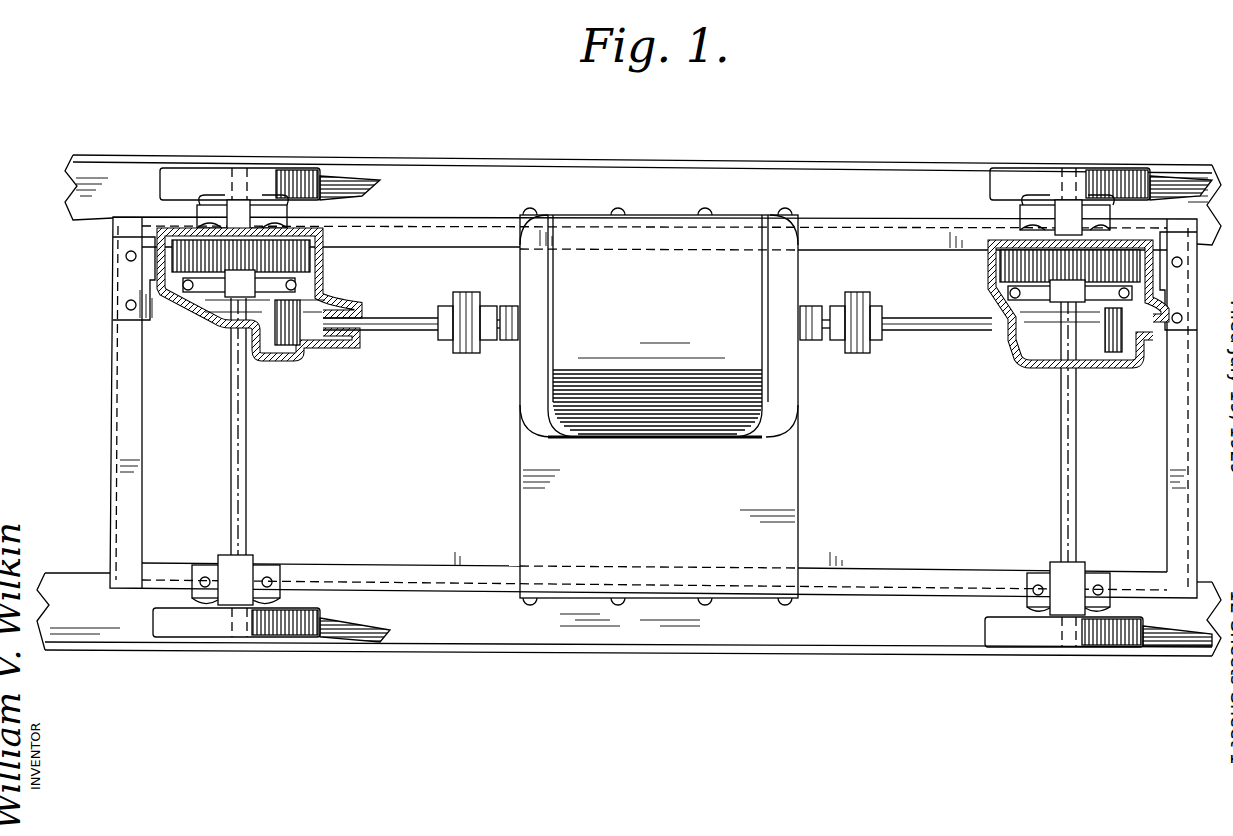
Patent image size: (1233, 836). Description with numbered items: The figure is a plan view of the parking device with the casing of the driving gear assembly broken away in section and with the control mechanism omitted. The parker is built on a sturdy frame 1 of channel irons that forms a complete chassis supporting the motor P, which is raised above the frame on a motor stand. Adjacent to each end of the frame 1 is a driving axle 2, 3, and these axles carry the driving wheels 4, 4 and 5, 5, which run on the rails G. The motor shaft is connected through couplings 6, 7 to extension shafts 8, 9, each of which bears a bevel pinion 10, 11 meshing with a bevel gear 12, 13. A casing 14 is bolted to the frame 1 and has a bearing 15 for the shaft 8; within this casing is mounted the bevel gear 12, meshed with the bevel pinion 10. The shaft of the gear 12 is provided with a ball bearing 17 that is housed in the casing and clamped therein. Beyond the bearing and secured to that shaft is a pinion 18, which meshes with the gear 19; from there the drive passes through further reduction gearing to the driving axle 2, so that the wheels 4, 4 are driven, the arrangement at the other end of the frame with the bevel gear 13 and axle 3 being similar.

The frame 1 is at (478, 236).
The driving axle 2 is at (242, 452).
The driving axle 3 is at (1075, 450).
The driving wheels 4 is at (180, 176).
The driving wheels 5 is at (1005, 188).
The coupling 6 is at (470, 304).
The coupling 7 is at (860, 306).
The extension shaft 8 is at (416, 332).
The extension shaft 9 is at (922, 332).
The bevel pinion 10 is at (252, 328).
The bevel pinion 11 is at (1090, 360).
The bevel gear 12 is at (228, 286).
The bevel gear 13 is at (1045, 318).
The casing 14 is at (112, 300).
The bearing 15 is at (300, 152).
The ball bearing 17 is at (176, 322).
The pinion 18 is at (302, 283).
The gear 19 is at (290, 257).
The rail G is at (826, 185).
The motor P is at (659, 406).